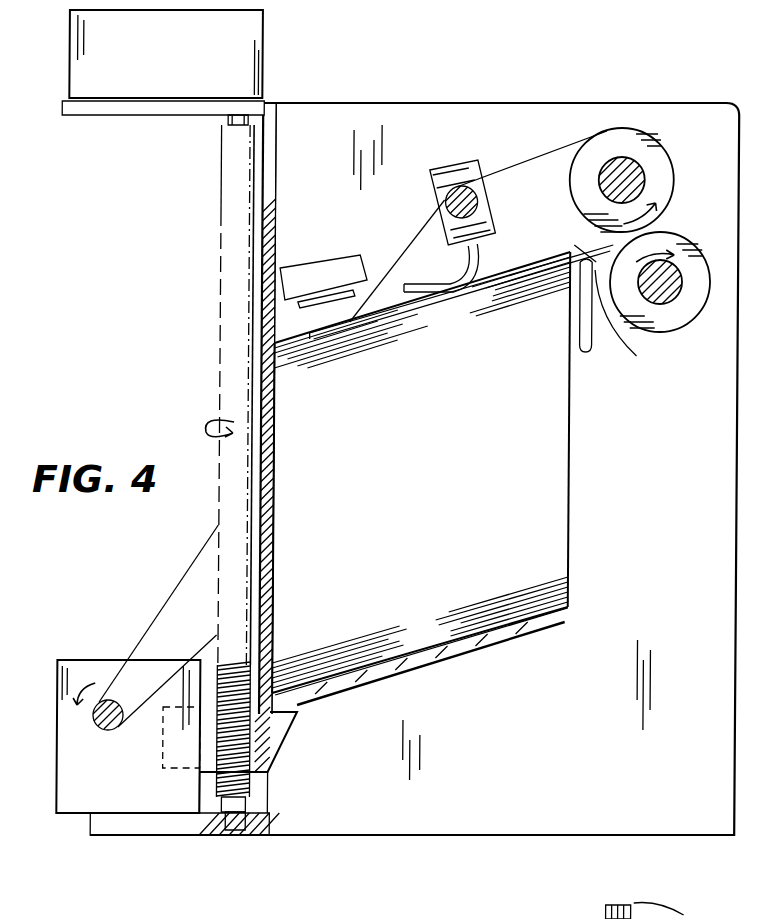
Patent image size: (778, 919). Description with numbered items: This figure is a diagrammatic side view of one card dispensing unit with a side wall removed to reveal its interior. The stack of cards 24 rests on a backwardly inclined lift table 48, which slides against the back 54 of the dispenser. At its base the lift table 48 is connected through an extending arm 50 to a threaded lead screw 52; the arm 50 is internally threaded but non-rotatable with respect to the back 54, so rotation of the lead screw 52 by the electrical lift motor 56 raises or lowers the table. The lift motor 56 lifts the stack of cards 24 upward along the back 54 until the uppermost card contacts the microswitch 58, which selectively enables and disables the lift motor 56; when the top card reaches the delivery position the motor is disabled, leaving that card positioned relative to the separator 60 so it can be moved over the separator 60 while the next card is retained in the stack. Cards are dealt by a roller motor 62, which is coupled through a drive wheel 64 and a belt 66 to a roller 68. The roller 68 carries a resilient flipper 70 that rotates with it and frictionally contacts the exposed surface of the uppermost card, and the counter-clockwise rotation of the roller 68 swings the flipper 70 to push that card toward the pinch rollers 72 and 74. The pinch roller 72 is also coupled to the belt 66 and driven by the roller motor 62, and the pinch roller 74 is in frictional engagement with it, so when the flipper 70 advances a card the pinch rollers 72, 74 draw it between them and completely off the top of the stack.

The stack of cards 24 is at (556, 494).
The lift table 48 is at (492, 645).
The extending arm 50 is at (282, 751).
The threaded lead screw 52 is at (222, 218).
The back 54 is at (271, 142).
The electrical lift motor 56 is at (258, 57).
The microswitch 58 is at (347, 255).
The separator 60 is at (589, 340).
The roller motor 62 is at (118, 810).
The drive wheel 64 is at (109, 722).
The belt 66 is at (580, 118).
The roller 68 is at (481, 167).
The resilient flipper 70 is at (460, 262).
The pinch roller 72 is at (647, 148).
The pinch roller 74 is at (674, 319).